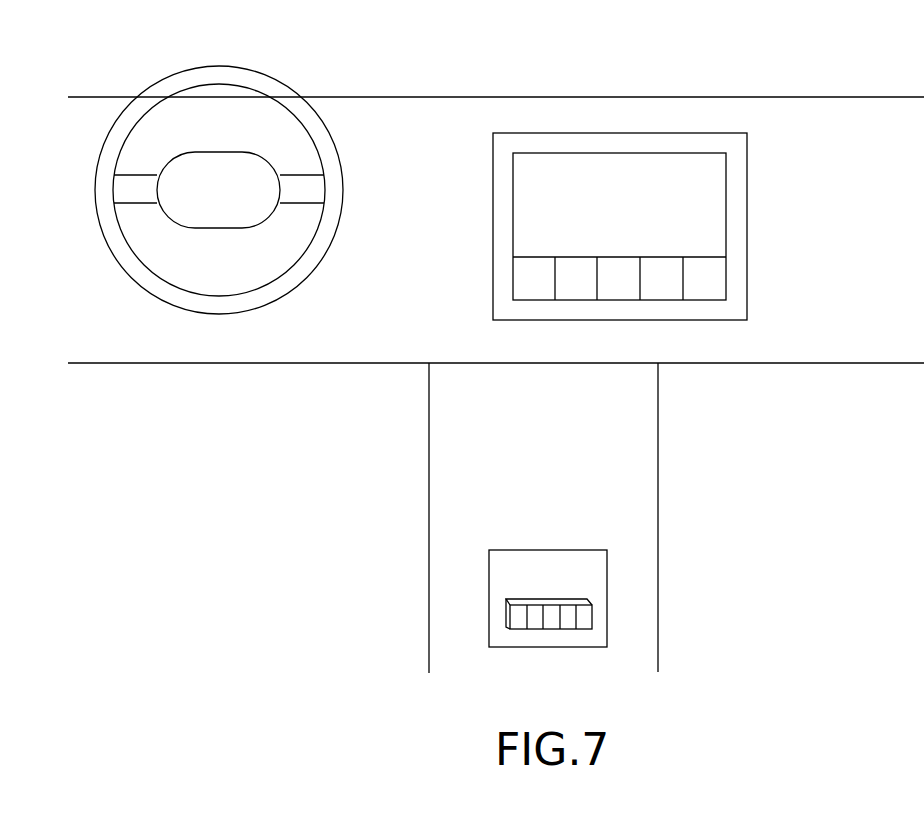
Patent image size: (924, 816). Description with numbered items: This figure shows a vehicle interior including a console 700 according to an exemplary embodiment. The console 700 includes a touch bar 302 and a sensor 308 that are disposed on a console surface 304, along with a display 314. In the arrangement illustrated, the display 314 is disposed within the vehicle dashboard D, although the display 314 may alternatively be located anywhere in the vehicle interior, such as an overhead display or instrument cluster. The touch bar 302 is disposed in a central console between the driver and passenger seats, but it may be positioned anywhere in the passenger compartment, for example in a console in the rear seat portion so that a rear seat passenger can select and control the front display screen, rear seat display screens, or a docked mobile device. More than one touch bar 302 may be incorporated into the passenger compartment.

The vehicle dashboard D is at (393, 132).
The console 700 is at (767, 308).
The display 314 is at (712, 182).
The console surface 304 is at (625, 522).
The sensor 308 is at (595, 570).
The touch bar 302 is at (595, 618).